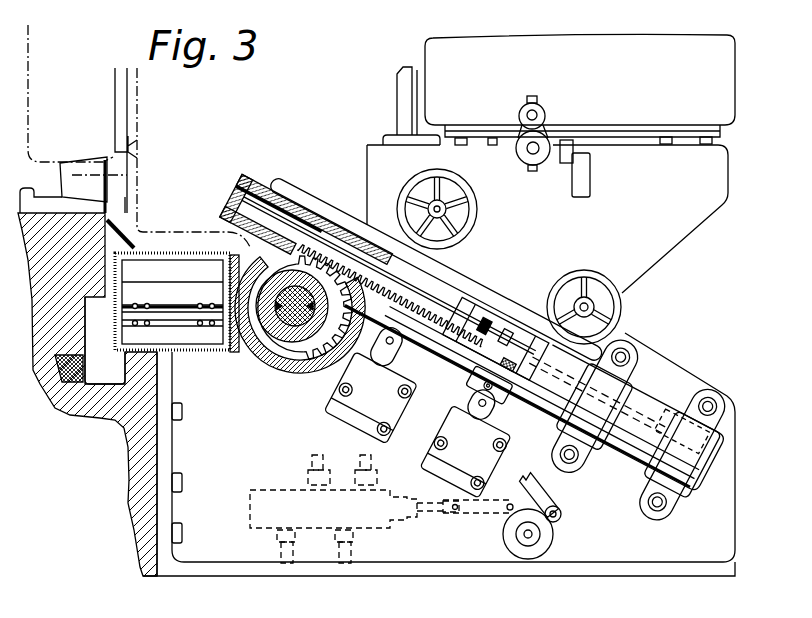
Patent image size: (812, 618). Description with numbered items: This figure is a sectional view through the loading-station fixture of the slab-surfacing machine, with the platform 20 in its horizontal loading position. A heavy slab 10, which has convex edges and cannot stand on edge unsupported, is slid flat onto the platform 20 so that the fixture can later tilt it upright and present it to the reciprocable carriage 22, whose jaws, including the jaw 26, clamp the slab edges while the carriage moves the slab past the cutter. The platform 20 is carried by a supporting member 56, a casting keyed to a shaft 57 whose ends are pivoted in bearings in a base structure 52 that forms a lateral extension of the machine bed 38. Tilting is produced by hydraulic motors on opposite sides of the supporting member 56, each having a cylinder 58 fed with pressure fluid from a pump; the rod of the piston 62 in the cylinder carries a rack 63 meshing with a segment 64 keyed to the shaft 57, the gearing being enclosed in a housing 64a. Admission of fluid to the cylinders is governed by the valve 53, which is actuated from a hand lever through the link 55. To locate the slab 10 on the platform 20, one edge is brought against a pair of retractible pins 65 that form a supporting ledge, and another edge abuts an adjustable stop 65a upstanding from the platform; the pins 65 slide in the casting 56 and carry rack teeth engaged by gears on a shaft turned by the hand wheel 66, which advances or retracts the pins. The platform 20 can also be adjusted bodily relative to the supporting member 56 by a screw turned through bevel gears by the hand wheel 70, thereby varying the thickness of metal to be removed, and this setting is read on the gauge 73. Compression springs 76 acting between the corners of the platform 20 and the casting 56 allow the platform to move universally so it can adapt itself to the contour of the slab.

The slab 10 is at (628, 47).
The platform 20 is at (722, 128).
The reciprocable carriage 22 is at (67, 327).
The jaw 26 is at (105, 167).
The machine bed 38 is at (108, 418).
The base structure 52 is at (715, 504).
The valve 53 is at (275, 488).
The link 55 is at (543, 493).
The supporting member 56 is at (660, 247).
The shaft 57 is at (258, 360).
The cylinder 58 is at (650, 410).
The piston 62 is at (642, 455).
The rack 63 is at (407, 317).
The segment 64 is at (318, 356).
The housing 64a is at (286, 372).
The retractible pin 65 is at (397, 97).
The adjustable stop 65a is at (543, 110).
The hand wheel 66 is at (478, 222).
The hand wheel 70 is at (622, 307).
The gauge 73 is at (572, 167).
The compression spring 76 is at (459, 147).